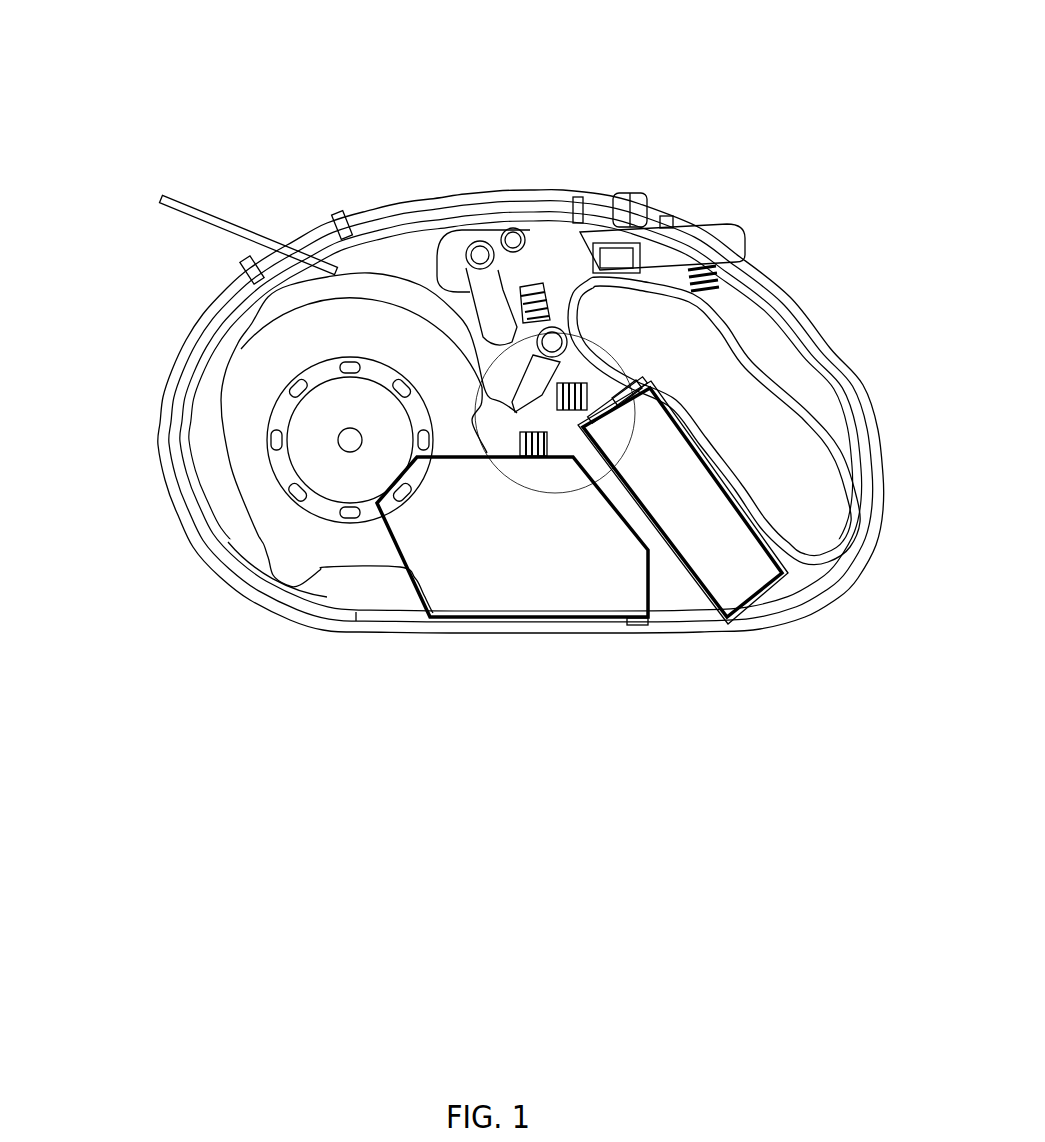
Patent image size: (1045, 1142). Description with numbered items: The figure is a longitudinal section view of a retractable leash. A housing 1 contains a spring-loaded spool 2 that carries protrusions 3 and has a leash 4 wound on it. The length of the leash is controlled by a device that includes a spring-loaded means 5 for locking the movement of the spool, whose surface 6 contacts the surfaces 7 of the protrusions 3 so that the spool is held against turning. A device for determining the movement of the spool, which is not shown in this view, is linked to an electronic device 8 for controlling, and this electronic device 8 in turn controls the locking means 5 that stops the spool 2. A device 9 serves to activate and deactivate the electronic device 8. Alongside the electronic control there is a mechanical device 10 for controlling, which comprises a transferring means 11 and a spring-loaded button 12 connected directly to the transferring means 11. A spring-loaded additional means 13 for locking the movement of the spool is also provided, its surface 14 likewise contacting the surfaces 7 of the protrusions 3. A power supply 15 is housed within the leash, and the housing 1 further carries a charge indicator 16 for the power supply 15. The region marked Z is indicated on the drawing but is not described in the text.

The housing 1 is at (190, 328).
The spring-loaded spool 2 is at (257, 388).
The protrusions 3 is at (260, 317).
The leash 4 is at (190, 212).
The spring-loaded means for locking the movement of the spool 5 is at (555, 327).
The surface 6 is at (512, 327).
The surfaces 7 is at (295, 300).
The electronic device for controlling 8 is at (498, 567).
The device for activating and deactivating the electronic device 9 is at (633, 212).
The mechanical device for controlling 10 is at (718, 300).
The transferring means 11 is at (507, 410).
The spring-loaded button 12 is at (712, 223).
The spring-loaded additional means for locking the movement of the spool 13 is at (514, 410).
The surface 14 is at (442, 210).
The power supply 15 is at (737, 583).
The charge indicator 16 is at (577, 205).
The latch region Z is at (620, 428).